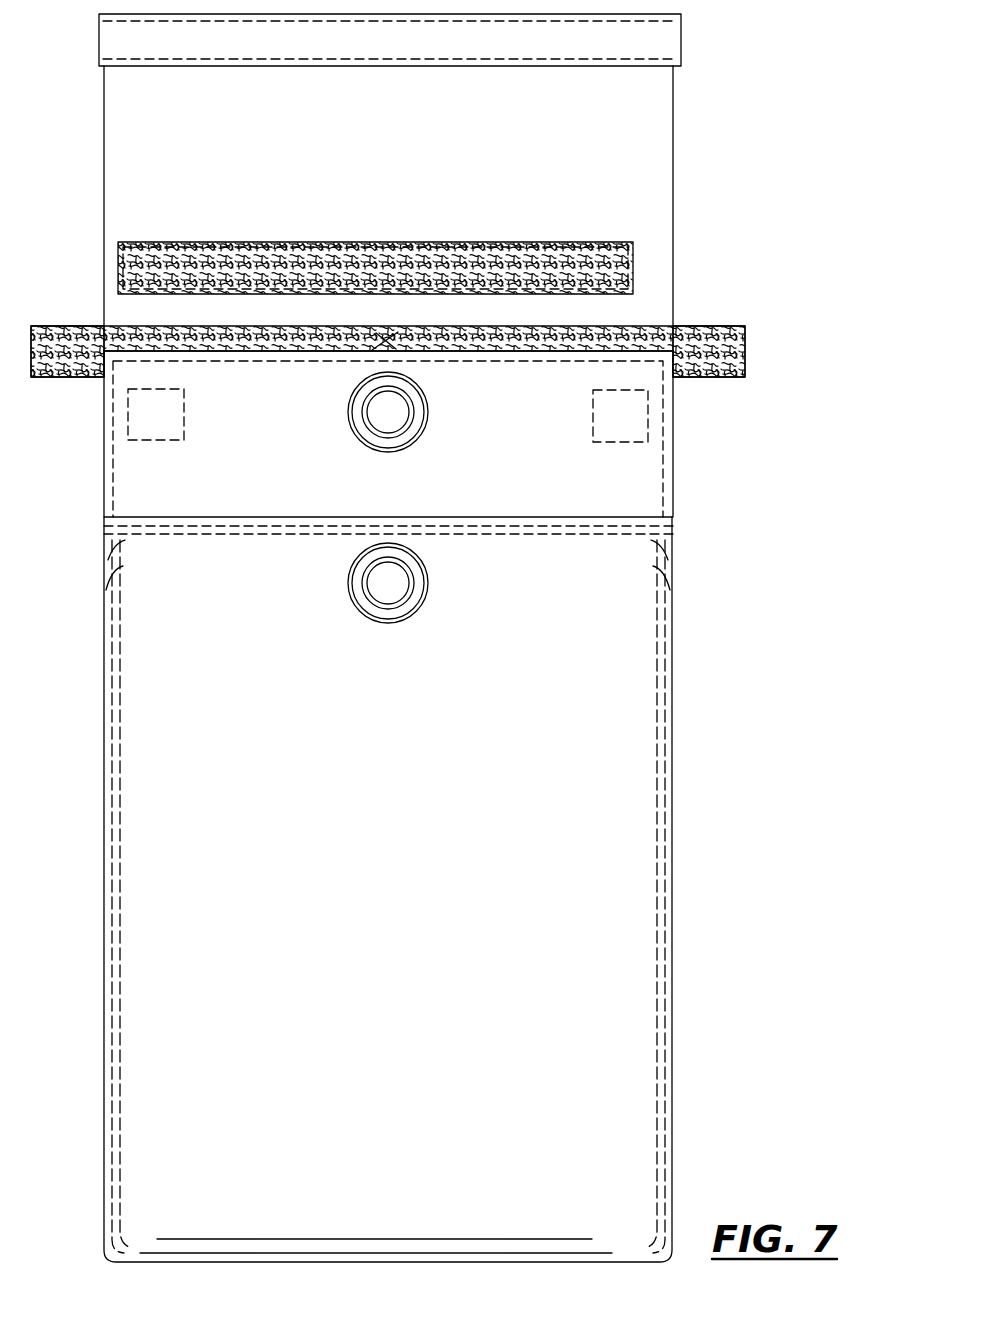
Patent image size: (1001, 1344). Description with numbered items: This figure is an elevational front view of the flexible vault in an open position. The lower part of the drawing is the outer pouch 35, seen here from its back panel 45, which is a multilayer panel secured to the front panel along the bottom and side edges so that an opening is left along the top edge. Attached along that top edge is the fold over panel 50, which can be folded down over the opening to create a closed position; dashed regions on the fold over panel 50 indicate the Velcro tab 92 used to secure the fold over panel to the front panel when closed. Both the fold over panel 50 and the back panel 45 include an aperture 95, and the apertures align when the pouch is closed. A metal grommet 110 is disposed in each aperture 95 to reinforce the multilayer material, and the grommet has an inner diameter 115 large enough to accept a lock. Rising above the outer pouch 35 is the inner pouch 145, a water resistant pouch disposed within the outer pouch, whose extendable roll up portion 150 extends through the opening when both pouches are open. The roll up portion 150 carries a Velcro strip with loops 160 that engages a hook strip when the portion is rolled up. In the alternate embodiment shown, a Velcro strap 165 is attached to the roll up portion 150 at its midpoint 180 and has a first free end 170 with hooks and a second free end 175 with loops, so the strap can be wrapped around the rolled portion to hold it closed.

The outer pouch 35 is at (399, 889).
The back panel 45 is at (152, 708).
The fold over panel 50 is at (150, 479).
The Velcro tab 92 is at (150, 427).
The aperture 95 is at (393, 417).
The metal grommet 110 is at (390, 442).
The inner diameter 115 is at (400, 428).
The inner pouch 145 is at (421, 224).
The extendable roll up portion 150 is at (130, 142).
The Velcro strip with loops 160 is at (130, 272).
The Velcro strap 165 is at (87, 340).
The first free end 170 is at (67, 362).
The second free end 175 is at (708, 372).
The midpoint 180 is at (380, 343).